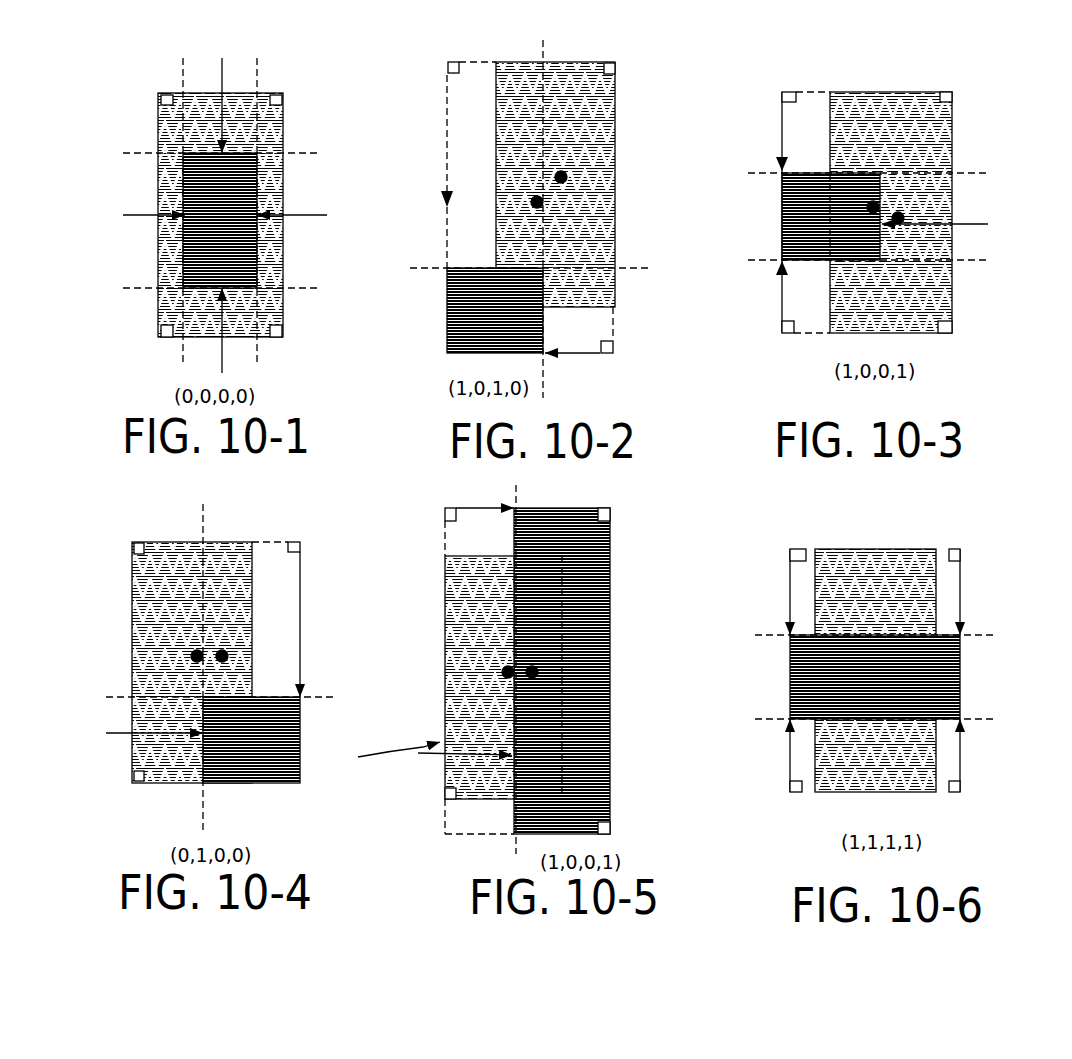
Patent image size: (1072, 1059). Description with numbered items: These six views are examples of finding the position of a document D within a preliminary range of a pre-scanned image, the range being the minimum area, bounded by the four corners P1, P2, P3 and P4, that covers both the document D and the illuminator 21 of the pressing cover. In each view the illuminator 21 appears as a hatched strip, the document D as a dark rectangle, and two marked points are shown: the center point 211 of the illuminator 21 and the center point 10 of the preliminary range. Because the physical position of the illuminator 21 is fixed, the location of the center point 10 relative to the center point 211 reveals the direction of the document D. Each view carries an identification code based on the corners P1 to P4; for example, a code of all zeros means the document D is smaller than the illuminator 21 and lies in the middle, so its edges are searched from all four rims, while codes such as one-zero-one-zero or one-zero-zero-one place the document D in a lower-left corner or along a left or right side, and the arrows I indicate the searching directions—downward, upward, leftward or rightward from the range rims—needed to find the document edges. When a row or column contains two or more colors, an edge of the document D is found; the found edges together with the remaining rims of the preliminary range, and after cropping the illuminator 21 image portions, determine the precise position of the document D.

In FIG. 10-1, the first corner of the preliminary range P1 is at (157, 93).
In FIG. 10-2, the first corner of the preliminary range P1 is at (448, 70).
In FIG. 10-3, the first corner of the preliminary range P1 is at (784, 100).
In FIG. 10-4, the first corner of the preliminary range P1 is at (136, 543).
In FIG. 10-5, the first corner of the preliminary range P1 is at (443, 518).
In FIG. 10-6, the first corner of the preliminary range P1 is at (791, 547).
In FIG. 10-1, the second corner of the preliminary range P2 is at (285, 92).
In FIG. 10-2, the second corner of the preliminary range P2 is at (607, 75).
In FIG. 10-3, the second corner of the preliminary range P2 is at (952, 97).
In FIG. 10-4, the second corner of the preliminary range P2 is at (297, 547).
In FIG. 10-5, the second corner of the preliminary range P2 is at (617, 508).
In FIG. 10-6, the second corner of the preliminary range P2 is at (956, 558).
In FIG. 10-1, the third corner of the preliminary range P3 is at (282, 337).
In FIG. 10-2, the third corner of the preliminary range P3 is at (615, 345).
In FIG. 10-3, the third corner of the preliminary range P3 is at (960, 333).
In FIG. 10-4, the third corner of the preliminary range P3 is at (305, 783).
In FIG. 10-5, the third corner of the preliminary range P3 is at (619, 821).
In FIG. 10-6, the third corner of the preliminary range P3 is at (971, 783).
In FIG. 10-1, the fourth corner of the preliminary range P4 is at (155, 338).
In FIG. 10-2, the fourth corner of the preliminary range P4 is at (448, 355).
In FIG. 10-3, the fourth corner of the preliminary range P4 is at (782, 335).
In FIG. 10-4, the fourth corner of the preliminary range P4 is at (138, 771).
In FIG. 10-5, the fourth corner of the preliminary range P4 is at (453, 792).
In FIG. 10-6, the fourth corner of the preliminary range P4 is at (791, 783).
In FIG. 10-1, the illuminator 21 is at (165, 257).
In FIG. 10-2, the illuminator 21 is at (495, 150).
In FIG. 10-3, the illuminator 21 is at (941, 147).
In FIG. 10-4, the illuminator 21 is at (151, 581).
In FIG. 10-5, the illuminator 21 is at (483, 635).
In FIG. 10-6, the illuminator 21 is at (833, 578).
In FIG. 10-2, the center point of the illuminator 211 is at (567, 182).
In FIG. 10-3, the center point of the illuminator 211 is at (905, 222).
In FIG. 10-4, the center point of the illuminator 211 is at (186, 662).
In FIG. 10-5, the center point of the illuminator 211 is at (503, 672).
In FIG. 10-2, the center point of the preliminary range 10 is at (528, 206).
In FIG. 10-3, the center point of the preliminary range 10 is at (888, 191).
In FIG. 10-4, the center point of the preliminary range 10 is at (229, 645).
In FIG. 10-5, the center point of the preliminary range 10 is at (546, 664).
In FIG. 10-1, the boundary interval line I is at (282, 258).
In FIG. 10-2, the boundary interval line I is at (613, 330).
In FIG. 10-3, the boundary interval line I is at (811, 87).
In FIG. 10-4, the boundary interval line I is at (305, 585).
In FIG. 10-5, the boundary interval line I is at (503, 669).
In FIG. 10-6, the boundary interval line I is at (963, 759).
In FIG. 10-1, the document D is at (220, 220).
In FIG. 10-2, the document D is at (495, 310).
In FIG. 10-3, the document D is at (831, 216).
In FIG. 10-4, the document D is at (251, 740).
In FIG. 10-5, the document D is at (562, 671).
In FIG. 10-6, the document D is at (875, 677).